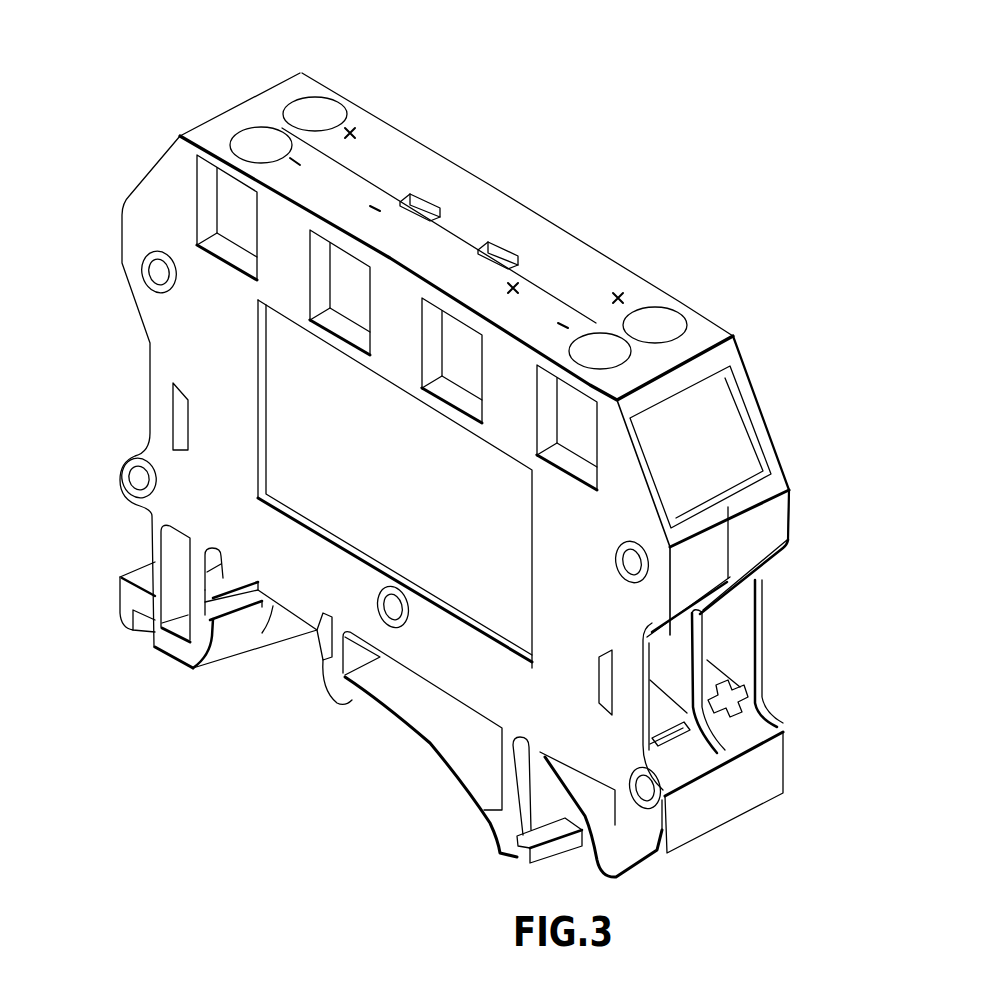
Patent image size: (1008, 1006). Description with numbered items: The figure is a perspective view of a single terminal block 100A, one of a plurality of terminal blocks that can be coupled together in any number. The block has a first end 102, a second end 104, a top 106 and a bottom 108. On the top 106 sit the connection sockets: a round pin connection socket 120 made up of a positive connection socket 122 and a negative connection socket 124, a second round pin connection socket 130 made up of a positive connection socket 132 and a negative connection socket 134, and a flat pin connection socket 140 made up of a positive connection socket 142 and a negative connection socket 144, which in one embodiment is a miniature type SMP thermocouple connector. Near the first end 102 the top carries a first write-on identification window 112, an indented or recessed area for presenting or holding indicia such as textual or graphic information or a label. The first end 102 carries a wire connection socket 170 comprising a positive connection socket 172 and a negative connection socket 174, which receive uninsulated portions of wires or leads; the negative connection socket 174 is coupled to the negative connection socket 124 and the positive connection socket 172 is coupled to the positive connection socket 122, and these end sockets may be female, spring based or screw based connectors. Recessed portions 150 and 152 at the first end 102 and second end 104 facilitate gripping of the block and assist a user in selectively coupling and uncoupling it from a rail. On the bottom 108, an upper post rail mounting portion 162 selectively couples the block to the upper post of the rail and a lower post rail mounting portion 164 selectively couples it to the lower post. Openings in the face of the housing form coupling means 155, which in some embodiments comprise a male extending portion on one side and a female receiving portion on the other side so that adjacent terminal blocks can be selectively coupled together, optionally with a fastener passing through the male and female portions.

The first terminal block 100A is at (788, 234).
The first end 102 is at (780, 510).
The second end 104 is at (122, 240).
The top 106 is at (398, 150).
The bottom 108 is at (311, 706).
The first write-on identification window 112 is at (733, 418).
The round pin connection socket 120 is at (691, 286).
The positive connection socket 122 is at (660, 320).
The negative connection socket 124 is at (600, 343).
The round pin connection socket 130 is at (266, 83).
The positive connection socket 132 is at (327, 114).
The negative connection socket 134 is at (243, 140).
The flat pin connection socket 140 is at (489, 193).
The positive connection socket 142 is at (512, 250).
The negative connection socket 144 is at (428, 200).
The recessed portion 150 is at (750, 714).
The recessed portion 152 is at (138, 385).
The coupling means 155 is at (350, 308).
The upper post rail mounting portion 162 is at (460, 805).
The lower post rail mounting portion 164 is at (172, 678).
The wire connection socket 170 is at (793, 684).
The positive connection socket 172 is at (720, 652).
The negative connection socket 174 is at (665, 718).